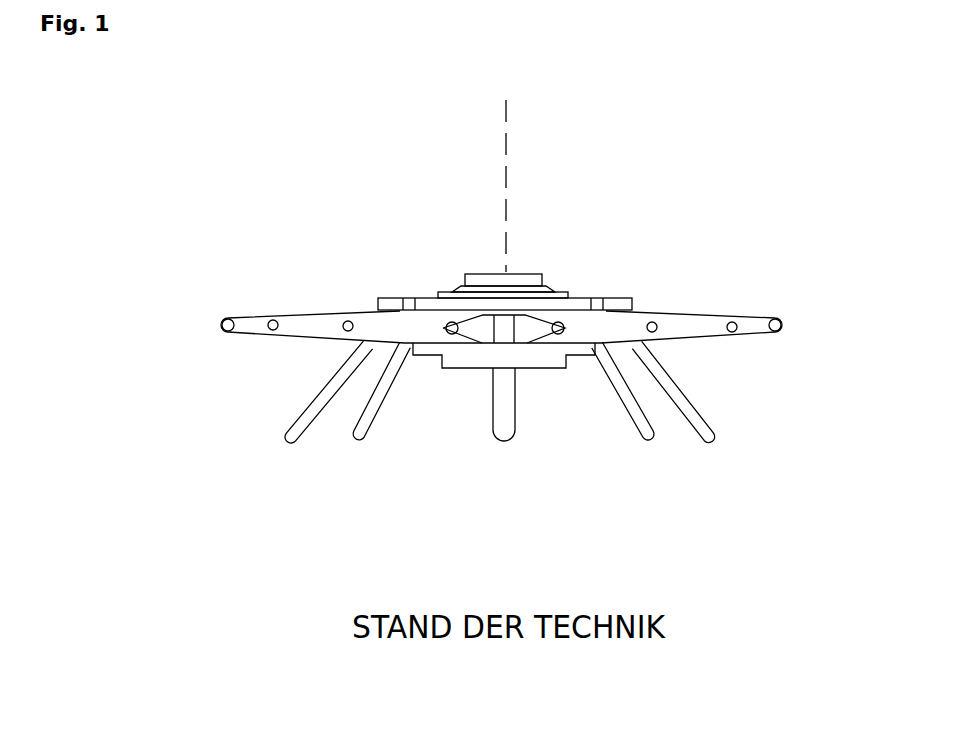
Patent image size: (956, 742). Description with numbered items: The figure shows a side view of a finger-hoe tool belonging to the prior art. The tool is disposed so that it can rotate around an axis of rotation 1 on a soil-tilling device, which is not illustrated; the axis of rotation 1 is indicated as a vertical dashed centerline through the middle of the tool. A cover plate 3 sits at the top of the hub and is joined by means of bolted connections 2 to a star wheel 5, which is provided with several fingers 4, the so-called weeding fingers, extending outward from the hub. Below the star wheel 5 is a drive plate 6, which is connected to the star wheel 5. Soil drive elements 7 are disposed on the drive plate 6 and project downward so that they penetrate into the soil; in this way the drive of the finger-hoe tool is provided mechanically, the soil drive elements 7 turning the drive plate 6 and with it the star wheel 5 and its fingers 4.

The axis of rotation 1 is at (506, 159).
The bolted connections 2 is at (404, 303).
The cover plate 3 is at (580, 298).
The fingers 4 is at (255, 328).
The star wheel 5 is at (430, 327).
The drive plate 6 is at (529, 357).
The soil drive elements 7 is at (507, 405).